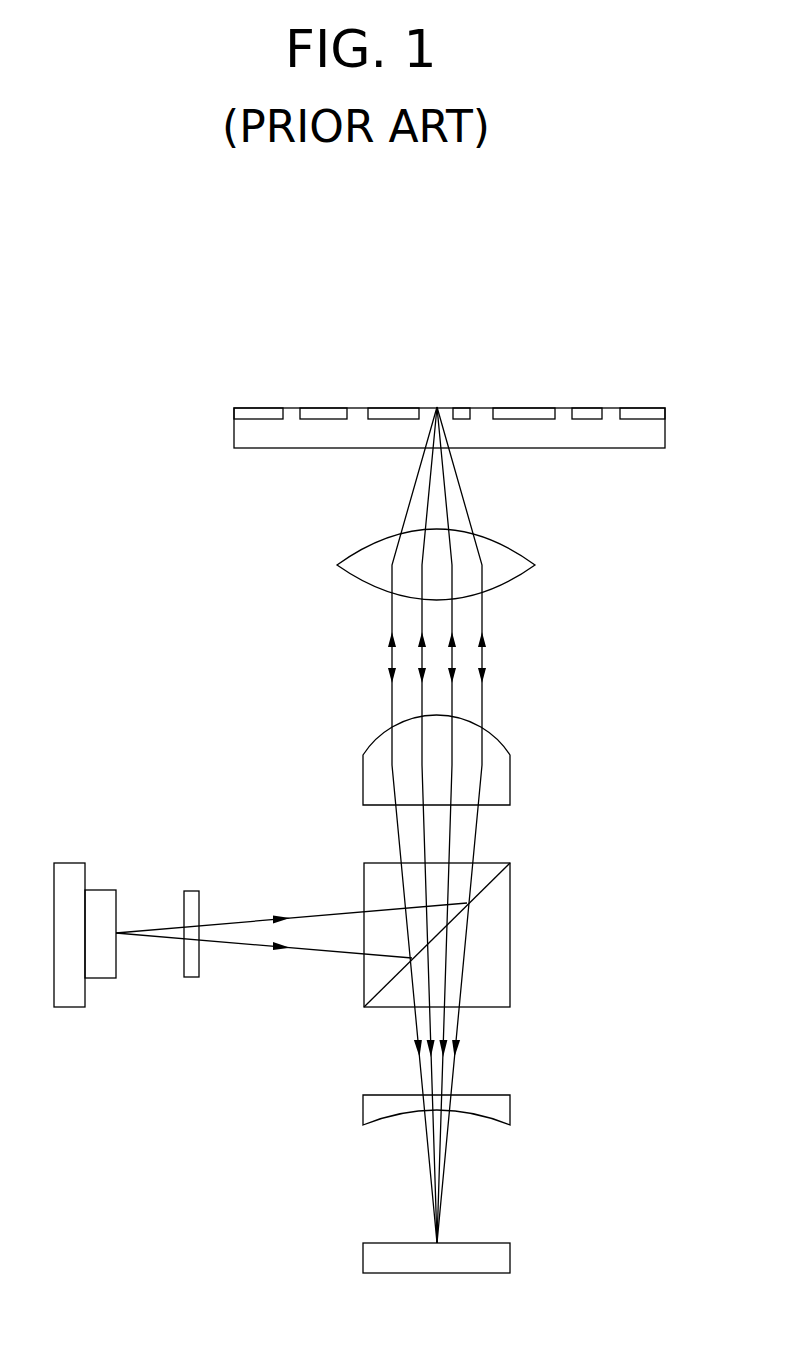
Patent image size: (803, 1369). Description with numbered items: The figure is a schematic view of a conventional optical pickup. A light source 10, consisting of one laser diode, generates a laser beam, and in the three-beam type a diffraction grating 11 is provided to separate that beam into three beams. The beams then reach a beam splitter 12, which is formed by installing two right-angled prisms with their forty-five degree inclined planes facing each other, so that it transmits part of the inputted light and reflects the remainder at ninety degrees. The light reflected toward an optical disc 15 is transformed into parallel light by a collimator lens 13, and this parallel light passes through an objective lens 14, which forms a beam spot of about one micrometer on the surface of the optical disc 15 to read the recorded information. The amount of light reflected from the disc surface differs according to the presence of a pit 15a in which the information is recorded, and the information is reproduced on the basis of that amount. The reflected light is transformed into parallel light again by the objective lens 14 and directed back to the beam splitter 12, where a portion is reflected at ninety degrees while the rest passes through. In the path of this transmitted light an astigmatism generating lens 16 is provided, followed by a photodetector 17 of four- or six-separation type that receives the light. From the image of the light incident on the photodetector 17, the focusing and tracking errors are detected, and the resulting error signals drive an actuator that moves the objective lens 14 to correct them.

The light source 10 is at (70, 1007).
The diffraction grating 11 is at (191, 977).
The beam splitter 12 is at (510, 935).
The collimator lens 13 is at (510, 765).
The objective lens 14 is at (337, 565).
The optical disc 15 is at (234, 432).
The pit 15a is at (265, 415).
The astigmatism generating lens 16 is at (510, 1110).
The photodetector 17 is at (510, 1260).